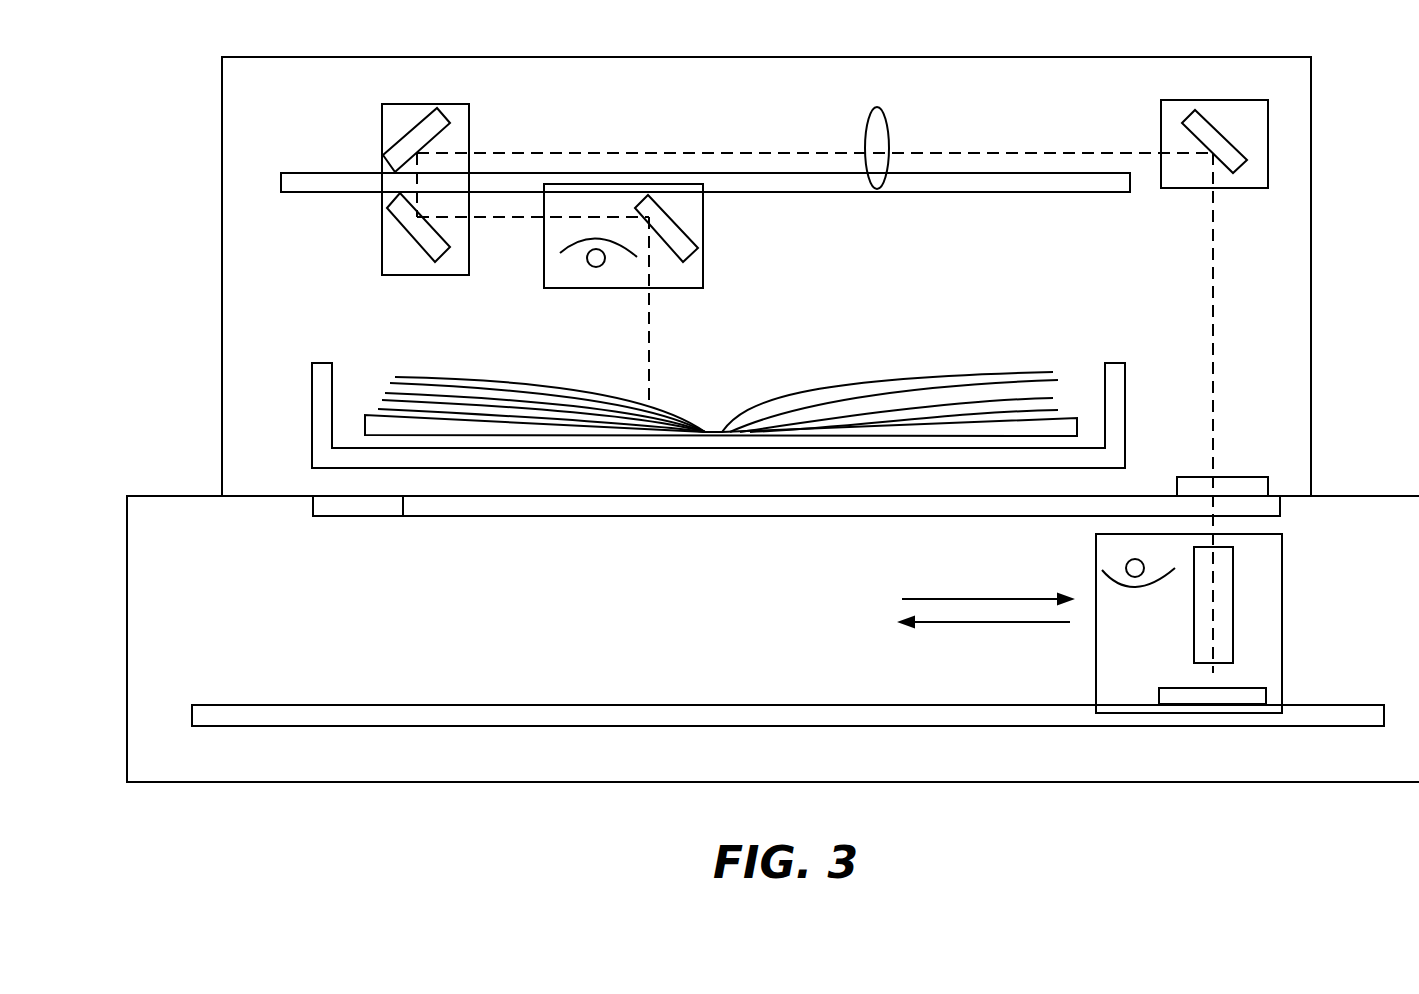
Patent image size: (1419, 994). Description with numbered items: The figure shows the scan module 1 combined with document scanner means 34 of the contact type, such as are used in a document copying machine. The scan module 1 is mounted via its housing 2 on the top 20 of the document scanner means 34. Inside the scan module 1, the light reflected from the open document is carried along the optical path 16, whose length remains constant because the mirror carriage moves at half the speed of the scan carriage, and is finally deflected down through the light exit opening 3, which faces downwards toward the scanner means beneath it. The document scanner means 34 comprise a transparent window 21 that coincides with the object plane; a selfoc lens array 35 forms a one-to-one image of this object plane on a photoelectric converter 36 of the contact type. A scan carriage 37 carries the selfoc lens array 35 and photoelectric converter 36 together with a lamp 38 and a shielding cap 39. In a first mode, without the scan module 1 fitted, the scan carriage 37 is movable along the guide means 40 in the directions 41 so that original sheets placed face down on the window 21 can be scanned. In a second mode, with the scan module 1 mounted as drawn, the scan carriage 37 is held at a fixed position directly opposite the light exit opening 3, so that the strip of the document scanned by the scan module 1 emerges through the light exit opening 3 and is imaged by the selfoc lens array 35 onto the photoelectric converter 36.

The scan module 1 is at (1293, 255).
The housing 2 is at (1311, 327).
The light exit opening 3 is at (1228, 477).
The optical path 16 is at (1214, 288).
The top 20 is at (1368, 495).
The window 21 is at (862, 500).
The document scanner means 34 is at (1353, 745).
The selfoc lens array 35 is at (1233, 636).
The photoelectric converter 36 is at (1262, 713).
The scan carriage 37 is at (1282, 552).
The lamp 38 is at (1127, 562).
The shielding cap 39 is at (1125, 585).
The guide means 40 is at (910, 704).
The directions 41 is at (980, 622).